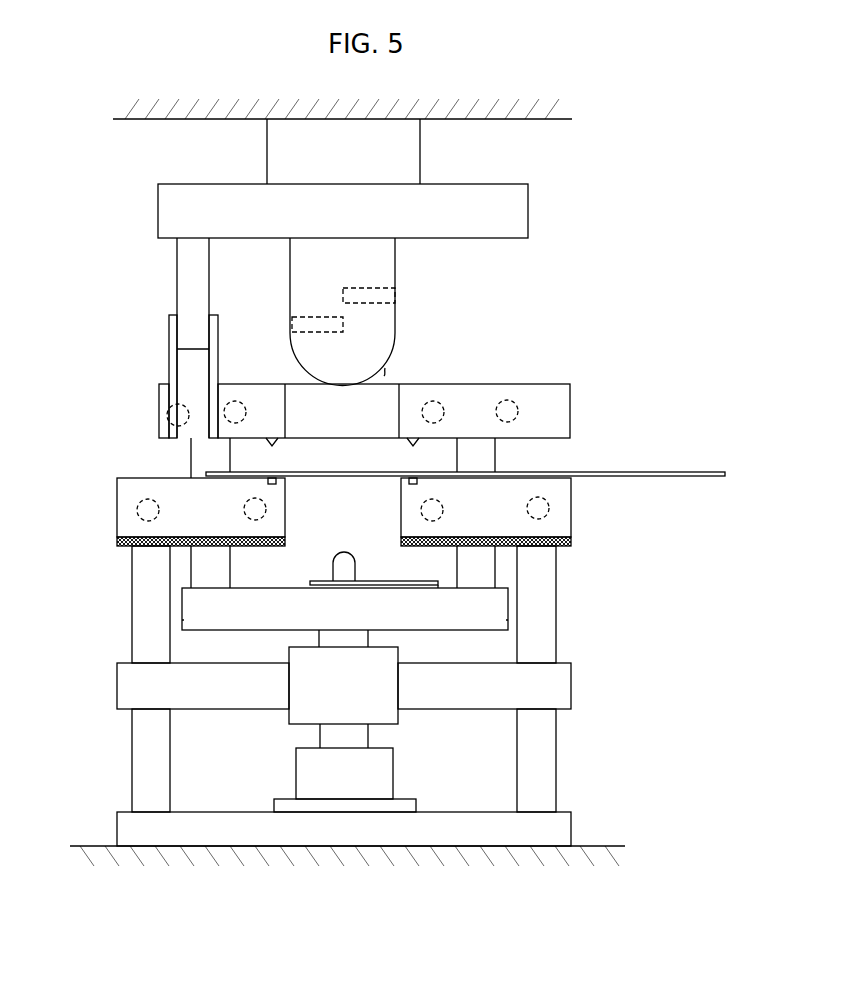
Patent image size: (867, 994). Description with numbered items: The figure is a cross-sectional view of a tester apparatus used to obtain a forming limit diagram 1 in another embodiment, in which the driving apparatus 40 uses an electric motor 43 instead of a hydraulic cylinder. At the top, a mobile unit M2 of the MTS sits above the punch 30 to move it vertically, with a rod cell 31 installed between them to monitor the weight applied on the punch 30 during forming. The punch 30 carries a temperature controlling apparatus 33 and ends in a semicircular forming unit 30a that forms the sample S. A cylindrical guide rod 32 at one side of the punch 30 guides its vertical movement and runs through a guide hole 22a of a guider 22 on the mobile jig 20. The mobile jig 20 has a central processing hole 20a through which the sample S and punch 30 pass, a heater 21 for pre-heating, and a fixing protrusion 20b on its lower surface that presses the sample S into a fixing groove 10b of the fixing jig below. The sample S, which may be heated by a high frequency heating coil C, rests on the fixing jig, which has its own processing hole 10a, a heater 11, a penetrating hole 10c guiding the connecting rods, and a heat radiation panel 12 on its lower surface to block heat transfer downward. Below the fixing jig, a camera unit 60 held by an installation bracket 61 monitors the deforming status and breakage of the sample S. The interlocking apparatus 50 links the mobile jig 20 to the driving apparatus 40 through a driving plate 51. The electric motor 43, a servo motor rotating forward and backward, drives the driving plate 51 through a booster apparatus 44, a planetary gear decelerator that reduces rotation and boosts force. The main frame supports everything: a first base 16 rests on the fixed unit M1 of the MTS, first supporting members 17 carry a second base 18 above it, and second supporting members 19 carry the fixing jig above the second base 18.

The forming limit diagram 1 is at (60, 343).
The mobile unit of the MTS M2 is at (131, 121).
The fixed unit of the MTS M1 is at (203, 862).
The rod cell 31 is at (421, 148).
The punch 30 is at (404, 277).
The forming unit 30a is at (384, 372).
The temperature controlling apparatus 33 is at (345, 325).
The guide rod 32 is at (176, 314).
The guider 22 is at (169, 355).
The guide hole 22a is at (176, 390).
The heater 21 is at (446, 410).
The mobile jig 20 is at (577, 412).
The processing hole 20a is at (320, 414).
The fixing protrusion 20b is at (272, 445).
The sample S is at (326, 472).
The high frequency heating coil C is at (663, 471).
The processing hole 10a is at (392, 514).
The fixing groove 10b is at (415, 478).
The penetrating hole 10c is at (186, 508).
The heater 11 is at (254, 520).
The heat radiation panel 12 is at (571, 541).
The second supporting member 19 is at (548, 574).
The interlocking apparatus 50 is at (514, 603).
The driving plate 51 is at (508, 619).
The camera unit 60 is at (342, 556).
The installation bracket 61 is at (370, 581).
The second base 18 is at (562, 686).
The driving apparatus 40 is at (436, 752).
The electric motor 43 is at (385, 783).
The booster apparatus 44 is at (347, 720).
The first supporting member 17 is at (545, 777).
The first base 16 is at (562, 825).